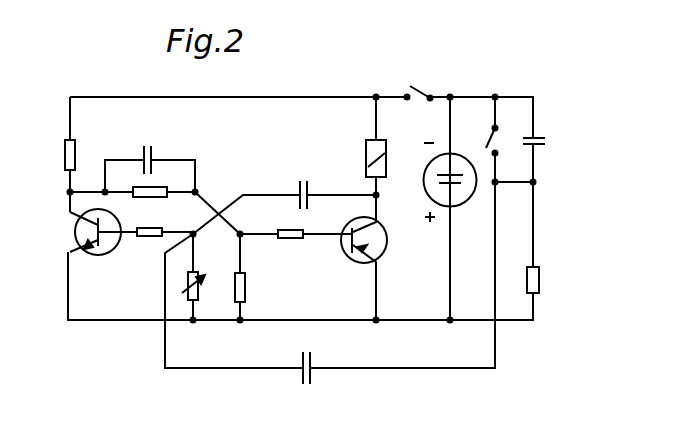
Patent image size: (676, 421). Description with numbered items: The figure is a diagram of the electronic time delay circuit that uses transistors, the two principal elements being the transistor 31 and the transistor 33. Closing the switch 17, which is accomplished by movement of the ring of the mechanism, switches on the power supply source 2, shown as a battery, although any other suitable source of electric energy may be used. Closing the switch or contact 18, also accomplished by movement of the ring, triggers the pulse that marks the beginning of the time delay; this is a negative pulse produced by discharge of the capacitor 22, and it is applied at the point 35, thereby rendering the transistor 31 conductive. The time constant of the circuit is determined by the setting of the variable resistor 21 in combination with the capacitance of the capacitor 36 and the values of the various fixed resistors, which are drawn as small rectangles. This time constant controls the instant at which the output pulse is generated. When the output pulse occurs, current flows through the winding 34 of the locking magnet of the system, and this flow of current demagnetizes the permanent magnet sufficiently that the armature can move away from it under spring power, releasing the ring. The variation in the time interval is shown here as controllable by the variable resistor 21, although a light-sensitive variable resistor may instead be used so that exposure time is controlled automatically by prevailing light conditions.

The power supply source 2 is at (460, 202).
The switch 17 is at (421, 84).
The switch or contact 18 is at (493, 131).
The variable resistor 21 is at (198, 291).
The capacitor 22 is at (538, 137).
The transistor 31 is at (100, 255).
The transistor 33 is at (382, 258).
The winding of the locking magnet 34 is at (366, 156).
The point 35 is at (197, 236).
The capacitor 36 is at (298, 188).